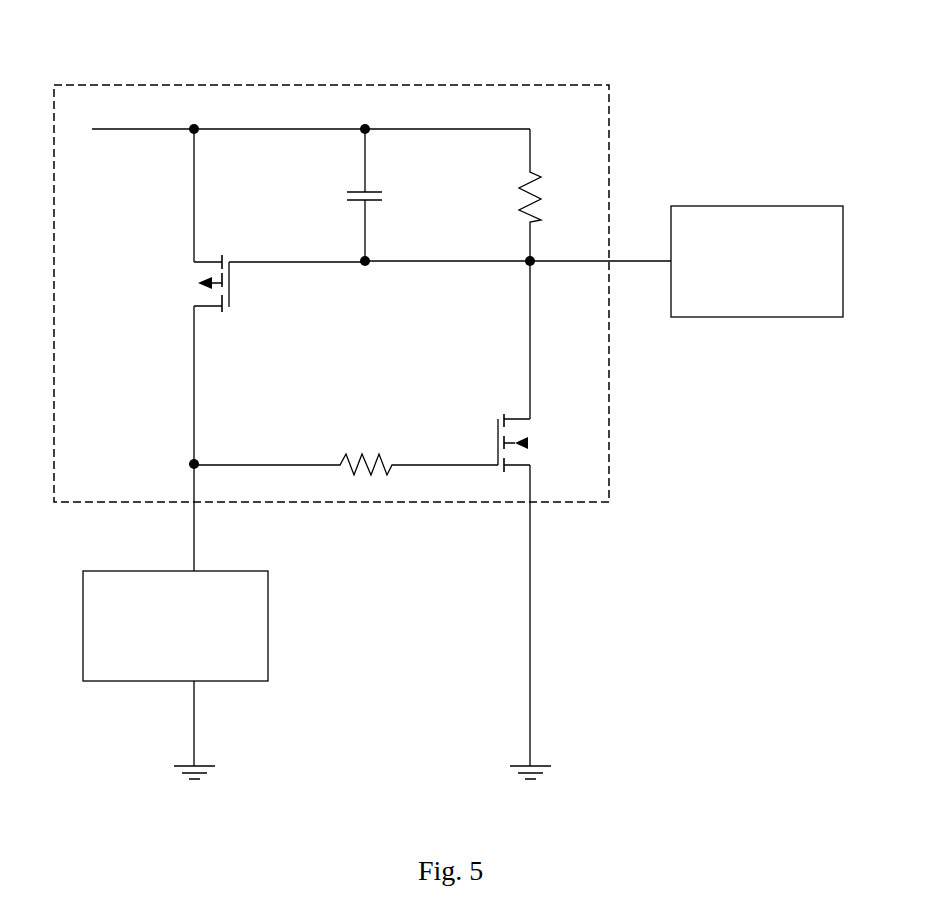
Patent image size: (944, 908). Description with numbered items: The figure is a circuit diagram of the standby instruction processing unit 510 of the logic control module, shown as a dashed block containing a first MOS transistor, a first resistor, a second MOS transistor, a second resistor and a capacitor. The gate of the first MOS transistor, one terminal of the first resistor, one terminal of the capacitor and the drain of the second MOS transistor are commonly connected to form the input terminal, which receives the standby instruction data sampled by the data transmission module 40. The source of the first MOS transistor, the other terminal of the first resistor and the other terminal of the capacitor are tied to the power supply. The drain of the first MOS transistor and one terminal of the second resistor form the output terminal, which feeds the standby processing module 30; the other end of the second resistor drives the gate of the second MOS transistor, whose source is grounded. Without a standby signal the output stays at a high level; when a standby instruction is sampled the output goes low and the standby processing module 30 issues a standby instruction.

The standby instruction processing unit 510 is at (480, 85).
The data transmission module 40 is at (756, 206).
The standby processing module 30 is at (232, 571).